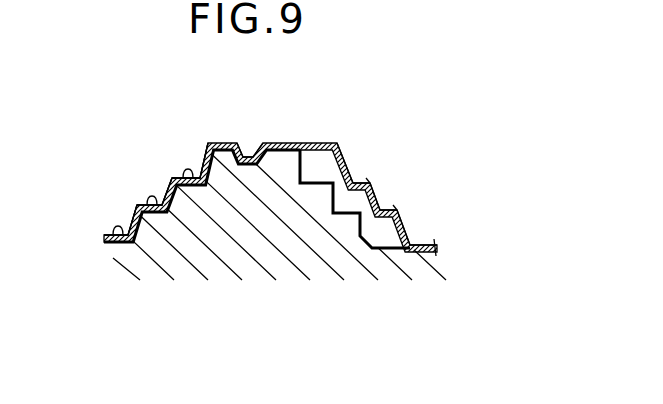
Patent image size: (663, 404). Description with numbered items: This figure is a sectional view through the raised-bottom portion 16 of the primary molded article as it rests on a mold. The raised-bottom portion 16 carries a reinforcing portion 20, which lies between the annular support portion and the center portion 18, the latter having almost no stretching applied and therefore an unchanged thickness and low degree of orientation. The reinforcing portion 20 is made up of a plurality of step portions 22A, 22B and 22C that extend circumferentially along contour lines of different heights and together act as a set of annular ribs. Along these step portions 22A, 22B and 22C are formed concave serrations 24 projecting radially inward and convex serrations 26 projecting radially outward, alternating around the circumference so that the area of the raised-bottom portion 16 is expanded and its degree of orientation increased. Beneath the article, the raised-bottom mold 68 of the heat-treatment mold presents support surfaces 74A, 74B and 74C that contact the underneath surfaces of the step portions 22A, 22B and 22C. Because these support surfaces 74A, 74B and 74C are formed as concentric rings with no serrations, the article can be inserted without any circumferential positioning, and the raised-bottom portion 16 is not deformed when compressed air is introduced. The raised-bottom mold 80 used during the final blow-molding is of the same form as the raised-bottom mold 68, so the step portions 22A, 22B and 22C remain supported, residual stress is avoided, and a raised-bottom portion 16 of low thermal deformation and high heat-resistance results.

The raised-bottom portion 16 is at (353, 153).
The center portion 18 is at (252, 157).
The reinforcing portion 20 is at (177, 148).
The step portion 22A is at (370, 183).
The step portion 22B is at (380, 206).
The step portion 22C is at (413, 241).
The concave serrations 24 is at (173, 176).
The convex serrations 26 is at (380, 178).
The support surface 74A is at (190, 200).
The support surface 74B is at (149, 213).
The support surface 74C is at (123, 243).
The raised-bottom mold 68 is at (279, 243).
The raised-bottom mold 80 is at (278, 260).